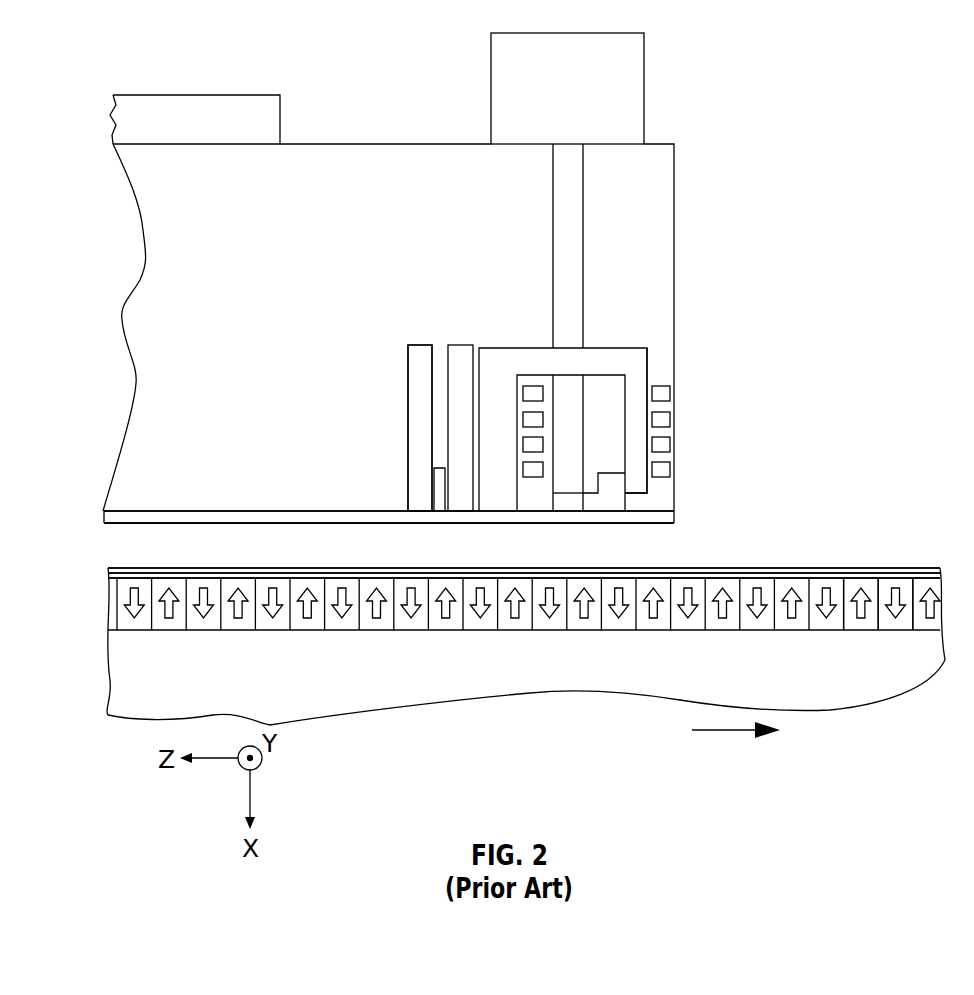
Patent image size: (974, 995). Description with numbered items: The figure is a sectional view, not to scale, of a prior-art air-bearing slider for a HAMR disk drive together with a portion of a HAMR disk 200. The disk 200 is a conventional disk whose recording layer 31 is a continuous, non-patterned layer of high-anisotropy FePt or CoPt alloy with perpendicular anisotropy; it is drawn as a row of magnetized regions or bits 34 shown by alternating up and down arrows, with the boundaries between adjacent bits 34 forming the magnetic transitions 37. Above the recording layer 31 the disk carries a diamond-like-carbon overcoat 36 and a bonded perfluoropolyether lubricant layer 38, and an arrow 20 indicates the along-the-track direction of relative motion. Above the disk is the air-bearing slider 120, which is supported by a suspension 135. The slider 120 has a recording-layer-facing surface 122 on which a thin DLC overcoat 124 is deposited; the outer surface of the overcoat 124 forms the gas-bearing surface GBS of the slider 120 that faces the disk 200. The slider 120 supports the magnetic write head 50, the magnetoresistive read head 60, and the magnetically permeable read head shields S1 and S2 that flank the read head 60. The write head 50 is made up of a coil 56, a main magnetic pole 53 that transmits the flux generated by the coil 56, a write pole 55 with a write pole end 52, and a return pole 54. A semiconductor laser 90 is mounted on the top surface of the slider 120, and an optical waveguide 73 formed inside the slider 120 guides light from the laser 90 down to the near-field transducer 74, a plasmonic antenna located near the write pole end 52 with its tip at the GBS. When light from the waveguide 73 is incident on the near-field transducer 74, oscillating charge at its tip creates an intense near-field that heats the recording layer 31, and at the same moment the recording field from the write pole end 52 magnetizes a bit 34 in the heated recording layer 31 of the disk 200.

The disk motion direction 20 is at (722, 732).
The recording layer 31 is at (86, 580).
The bits 34 is at (893, 590).
The overcoat 36 is at (837, 578).
The magnetic transitions 37 is at (911, 657).
The liquid lubricant layer 38 is at (772, 568).
The magnetic write head 50 is at (493, 285).
The write pole end 52 is at (598, 490).
The main magnetic pole 53 is at (638, 370).
The return pole 54 is at (499, 358).
The write pole 55 is at (613, 503).
The coil 56 is at (518, 380).
The magnetoresistive read head 60 is at (434, 500).
The optical waveguide 73 is at (567, 290).
The near-field transducer 74 is at (566, 493).
The semiconductor laser 90 is at (632, 88).
The air-bearing slider 120 is at (148, 408).
The recording-layer-facing surface 122 is at (217, 511).
The overcoat 124 is at (252, 523).
The suspension 135 is at (268, 100).
The disk 200 is at (827, 693).
The gas-bearing surface GBS is at (655, 523).
The read head shield S1 is at (420, 427).
The read head shield S2 is at (463, 342).